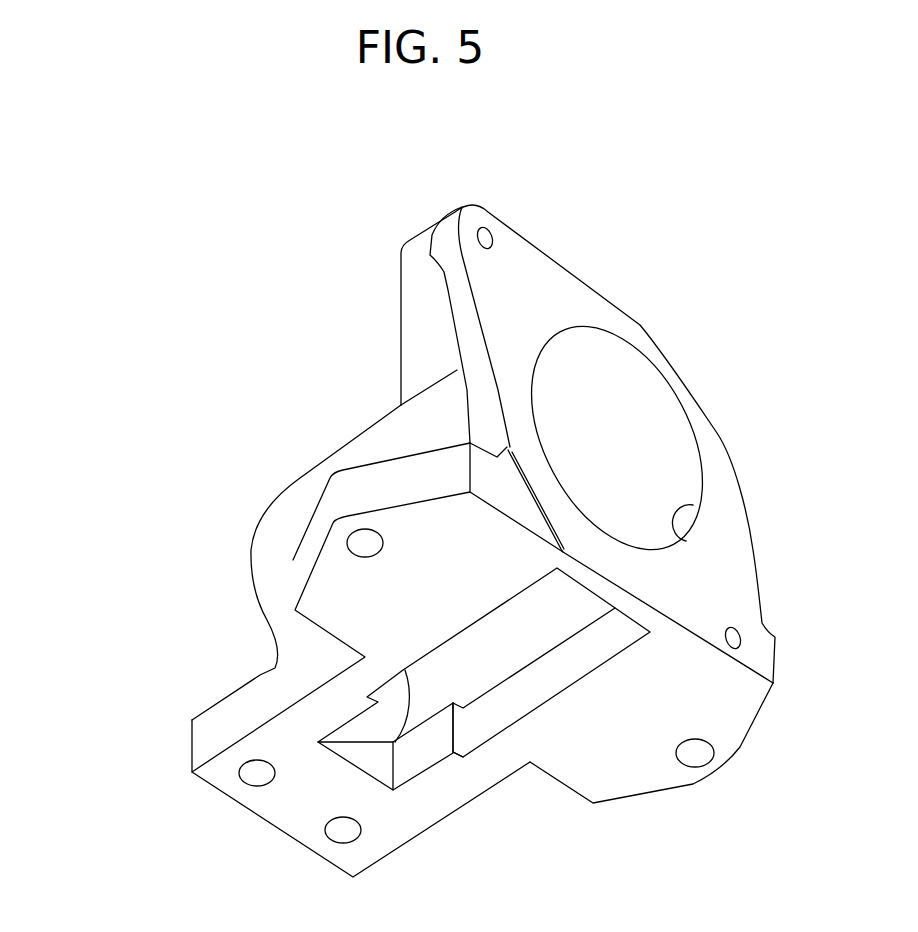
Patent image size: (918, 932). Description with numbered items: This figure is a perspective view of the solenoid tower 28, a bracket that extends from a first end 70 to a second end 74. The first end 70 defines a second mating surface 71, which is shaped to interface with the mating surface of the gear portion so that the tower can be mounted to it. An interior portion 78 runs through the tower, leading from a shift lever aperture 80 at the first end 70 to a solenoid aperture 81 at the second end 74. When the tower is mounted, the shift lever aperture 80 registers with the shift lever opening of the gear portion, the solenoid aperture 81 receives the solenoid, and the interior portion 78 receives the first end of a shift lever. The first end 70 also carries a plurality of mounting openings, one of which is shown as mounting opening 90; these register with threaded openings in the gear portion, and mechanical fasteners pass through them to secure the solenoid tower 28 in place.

The solenoid tower 28 is at (163, 565).
The first end 70 is at (587, 755).
The second mating surface 71 is at (393, 820).
The second end 74 is at (503, 322).
The interior portion 78 is at (622, 428).
The shift lever aperture 80 is at (445, 643).
The solenoid aperture 81 is at (686, 541).
The mounting opening 90 is at (365, 543).